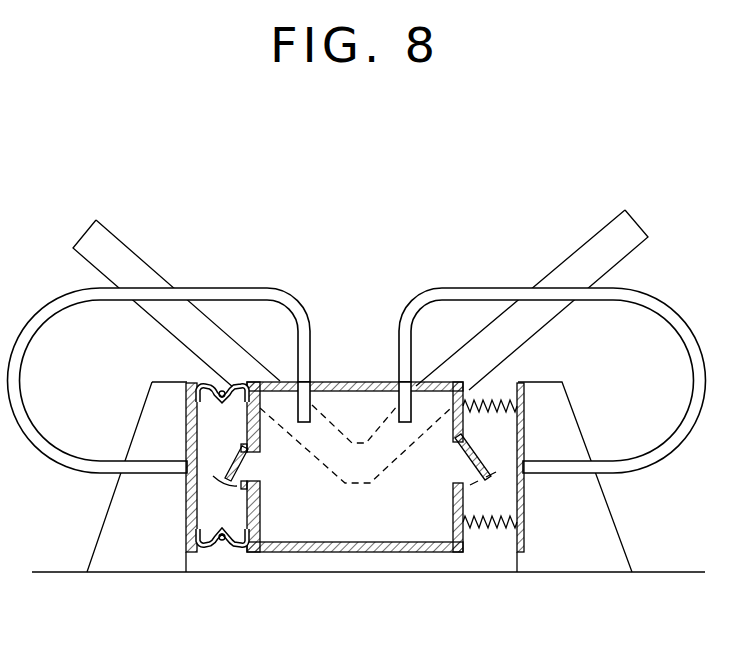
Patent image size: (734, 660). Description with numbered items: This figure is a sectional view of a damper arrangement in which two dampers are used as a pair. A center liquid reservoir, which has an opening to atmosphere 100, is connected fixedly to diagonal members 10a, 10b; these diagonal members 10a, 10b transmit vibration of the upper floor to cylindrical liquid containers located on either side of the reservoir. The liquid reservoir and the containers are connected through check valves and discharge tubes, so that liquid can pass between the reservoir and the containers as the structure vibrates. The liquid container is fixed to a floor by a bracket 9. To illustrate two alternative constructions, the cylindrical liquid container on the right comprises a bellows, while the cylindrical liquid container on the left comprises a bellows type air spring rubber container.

The bracket 9 is at (112, 524).
The diagonal member 10a is at (131, 258).
The diagonal member 10b is at (582, 257).
The opening to atmosphere 100 is at (315, 381).